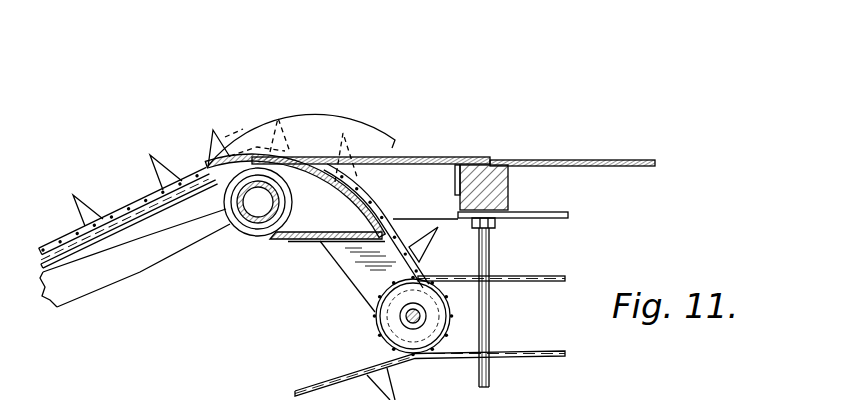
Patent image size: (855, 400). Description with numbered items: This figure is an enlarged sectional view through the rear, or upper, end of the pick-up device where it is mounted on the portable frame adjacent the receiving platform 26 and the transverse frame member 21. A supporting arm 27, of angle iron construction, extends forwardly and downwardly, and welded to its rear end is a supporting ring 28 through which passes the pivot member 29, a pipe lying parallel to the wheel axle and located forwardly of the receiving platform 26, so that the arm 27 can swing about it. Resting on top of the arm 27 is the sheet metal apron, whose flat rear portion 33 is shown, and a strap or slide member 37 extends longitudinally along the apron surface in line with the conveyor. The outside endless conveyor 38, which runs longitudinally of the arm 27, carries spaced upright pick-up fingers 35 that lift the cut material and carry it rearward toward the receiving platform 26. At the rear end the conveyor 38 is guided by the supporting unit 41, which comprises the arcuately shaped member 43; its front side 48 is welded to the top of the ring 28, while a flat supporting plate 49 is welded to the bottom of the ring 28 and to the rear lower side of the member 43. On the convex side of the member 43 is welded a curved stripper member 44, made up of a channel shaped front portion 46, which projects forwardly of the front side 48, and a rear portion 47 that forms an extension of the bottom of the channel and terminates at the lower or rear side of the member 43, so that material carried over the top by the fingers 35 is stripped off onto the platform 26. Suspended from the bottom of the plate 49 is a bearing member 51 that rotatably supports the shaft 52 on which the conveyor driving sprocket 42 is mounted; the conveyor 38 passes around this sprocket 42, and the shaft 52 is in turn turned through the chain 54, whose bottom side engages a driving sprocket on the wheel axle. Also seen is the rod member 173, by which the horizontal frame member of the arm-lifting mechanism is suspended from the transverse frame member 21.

The transverse frame member 21 is at (508, 192).
The receiving platform 26 is at (560, 158).
The supporting arm 27 is at (141, 253).
The supporting ring 28 is at (250, 230).
The pivot member 29 is at (270, 202).
The flat rear portion of the apron 33 is at (427, 156).
The pick-up finger 35 is at (204, 131).
The strap or slide member 37 is at (160, 204).
The outside endless conveyor 38 is at (107, 217).
The supporting unit 41 is at (378, 208).
The conveyor driving sprocket 42 is at (377, 320).
The arcuately shaped member 43 is at (351, 201).
The curved stripper member 44 is at (310, 125).
The channel shaped front portion 46 is at (262, 100).
The rear portion of stripper member 47 is at (393, 220).
The front side of arcuate member 48 is at (262, 160).
The flat supporting plate 49 is at (308, 242).
The bearing member 51 is at (349, 268).
The shaft 52 is at (404, 321).
The chain 54 is at (510, 272).
The rod member 173 is at (490, 320).